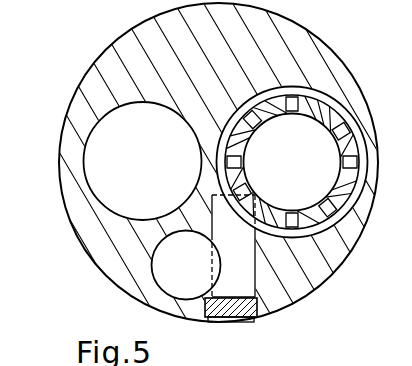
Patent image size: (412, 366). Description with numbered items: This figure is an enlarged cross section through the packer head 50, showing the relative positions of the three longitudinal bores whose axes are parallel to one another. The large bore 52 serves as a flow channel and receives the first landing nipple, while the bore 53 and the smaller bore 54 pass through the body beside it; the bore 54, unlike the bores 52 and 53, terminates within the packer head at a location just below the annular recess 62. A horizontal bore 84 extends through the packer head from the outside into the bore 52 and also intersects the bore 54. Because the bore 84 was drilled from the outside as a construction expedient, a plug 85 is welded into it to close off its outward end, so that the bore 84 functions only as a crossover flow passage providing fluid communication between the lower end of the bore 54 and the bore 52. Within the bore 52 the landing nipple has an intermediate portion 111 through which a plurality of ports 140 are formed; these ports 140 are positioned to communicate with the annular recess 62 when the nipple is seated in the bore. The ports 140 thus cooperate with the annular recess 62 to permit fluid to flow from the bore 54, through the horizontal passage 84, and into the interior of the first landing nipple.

The housing body 50 is at (92, 65).
The bore 52 is at (304, 169).
The bore 53 is at (93, 128).
The bore 54 is at (159, 286).
The annular recess 62 is at (351, 118).
The horizontal bore 84 is at (252, 281).
The plug 85 is at (235, 319).
The intermediate portion 111 is at (332, 116).
The ports 140 is at (301, 96).